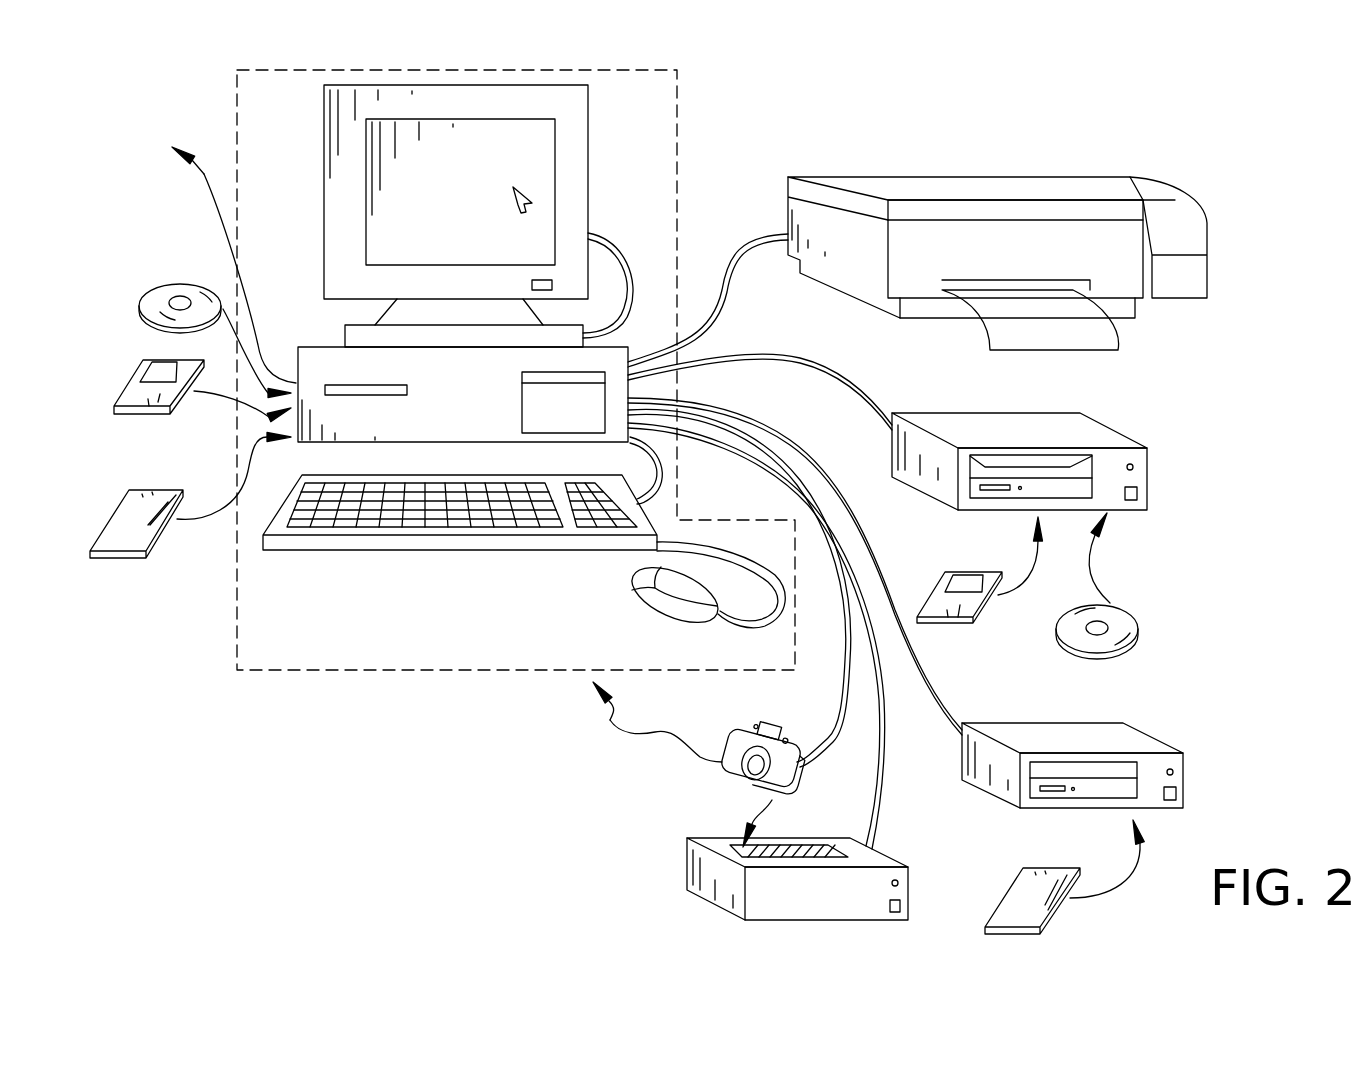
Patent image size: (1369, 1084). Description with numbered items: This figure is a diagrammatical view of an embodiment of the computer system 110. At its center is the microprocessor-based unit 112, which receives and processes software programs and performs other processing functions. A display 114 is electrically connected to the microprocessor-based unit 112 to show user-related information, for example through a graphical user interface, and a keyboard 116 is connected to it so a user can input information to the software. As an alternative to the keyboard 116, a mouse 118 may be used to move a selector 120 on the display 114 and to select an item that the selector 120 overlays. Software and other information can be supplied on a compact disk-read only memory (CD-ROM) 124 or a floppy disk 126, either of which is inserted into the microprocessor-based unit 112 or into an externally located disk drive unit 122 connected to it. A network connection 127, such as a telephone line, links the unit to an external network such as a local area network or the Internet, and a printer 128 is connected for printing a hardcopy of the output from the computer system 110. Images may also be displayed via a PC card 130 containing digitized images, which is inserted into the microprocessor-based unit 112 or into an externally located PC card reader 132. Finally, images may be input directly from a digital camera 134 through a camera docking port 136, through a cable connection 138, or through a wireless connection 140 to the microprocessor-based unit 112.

The computer system 110 is at (677, 98).
The microprocessor-based unit 112 is at (342, 347).
The display 114 is at (588, 103).
The keyboard 116 is at (420, 545).
The mouse 118 is at (653, 605).
The selector 120 is at (522, 194).
The externally located disk drive unit 122 is at (1105, 435).
The compact disk-read only memory (CD-ROM) 124 is at (158, 290).
The floppy disk 126 is at (136, 386).
The network connection 127 is at (204, 174).
The printer 128 is at (950, 180).
The personal computer card (PC card) 130 is at (119, 517).
The PC card reader 132 is at (1138, 742).
The digital camera 134 is at (732, 768).
The camera docking port 136 is at (692, 873).
The cable connection 138 is at (843, 660).
The wireless connection 140 is at (610, 720).